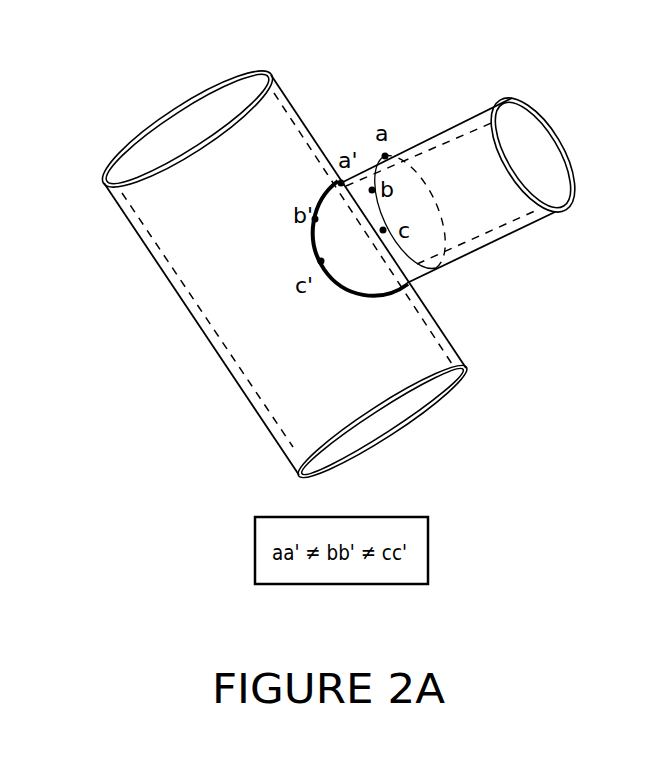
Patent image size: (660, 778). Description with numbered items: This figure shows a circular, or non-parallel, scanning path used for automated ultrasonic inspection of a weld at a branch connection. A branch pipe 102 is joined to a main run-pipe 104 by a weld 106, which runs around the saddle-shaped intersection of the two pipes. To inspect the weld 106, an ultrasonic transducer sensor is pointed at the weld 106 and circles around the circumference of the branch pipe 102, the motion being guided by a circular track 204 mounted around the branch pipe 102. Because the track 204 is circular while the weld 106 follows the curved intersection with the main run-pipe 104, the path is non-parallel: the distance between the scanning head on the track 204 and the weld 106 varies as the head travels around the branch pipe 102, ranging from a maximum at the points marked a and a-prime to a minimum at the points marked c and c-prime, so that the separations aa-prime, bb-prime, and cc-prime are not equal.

The branch pipe 102 is at (541, 214).
The main run-pipe 104 is at (202, 333).
The weld 106 is at (390, 292).
The circular track 204 is at (433, 183).